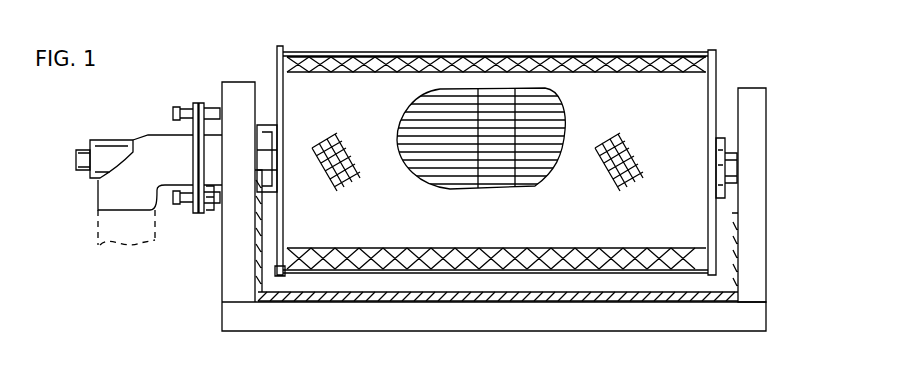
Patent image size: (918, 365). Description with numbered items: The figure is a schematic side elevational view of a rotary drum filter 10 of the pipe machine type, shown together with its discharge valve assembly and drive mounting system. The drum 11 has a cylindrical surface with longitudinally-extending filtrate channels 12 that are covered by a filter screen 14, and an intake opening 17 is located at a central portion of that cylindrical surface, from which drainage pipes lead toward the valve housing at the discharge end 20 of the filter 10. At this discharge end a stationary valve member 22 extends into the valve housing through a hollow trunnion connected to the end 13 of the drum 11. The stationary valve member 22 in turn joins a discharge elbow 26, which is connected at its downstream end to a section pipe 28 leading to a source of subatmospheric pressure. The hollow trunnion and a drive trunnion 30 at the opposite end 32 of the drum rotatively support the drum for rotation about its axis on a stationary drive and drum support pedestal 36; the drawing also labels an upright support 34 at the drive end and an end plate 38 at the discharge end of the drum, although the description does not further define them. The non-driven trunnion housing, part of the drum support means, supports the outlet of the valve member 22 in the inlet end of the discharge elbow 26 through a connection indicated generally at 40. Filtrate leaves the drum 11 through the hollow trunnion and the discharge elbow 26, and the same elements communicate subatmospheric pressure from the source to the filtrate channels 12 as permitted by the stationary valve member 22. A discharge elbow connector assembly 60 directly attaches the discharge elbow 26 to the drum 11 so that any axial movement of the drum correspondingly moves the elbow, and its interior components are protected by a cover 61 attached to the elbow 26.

The rotary drum filter 10 is at (728, 74).
The drum 11 is at (282, 273).
The filtrate channels 12 is at (523, 103).
The end of the drum 13 is at (277, 240).
The filter screen 14 is at (352, 82).
The intake opening 17 is at (478, 102).
The discharge end 20 is at (243, 90).
The stationary valve member 22 is at (212, 198).
The discharge elbow 26 is at (152, 133).
The section pipe 28 is at (100, 252).
The drive trunnion 30 is at (735, 160).
The opposite end of the drum 32 is at (722, 62).
The support column 34 is at (766, 117).
The stationary drive and drum support pedestal 36 is at (222, 290).
The end wall 38 is at (277, 66).
The connection 40 is at (198, 105).
The discharge elbow connector assembly 60 is at (101, 136).
The cover 61 is at (82, 148).